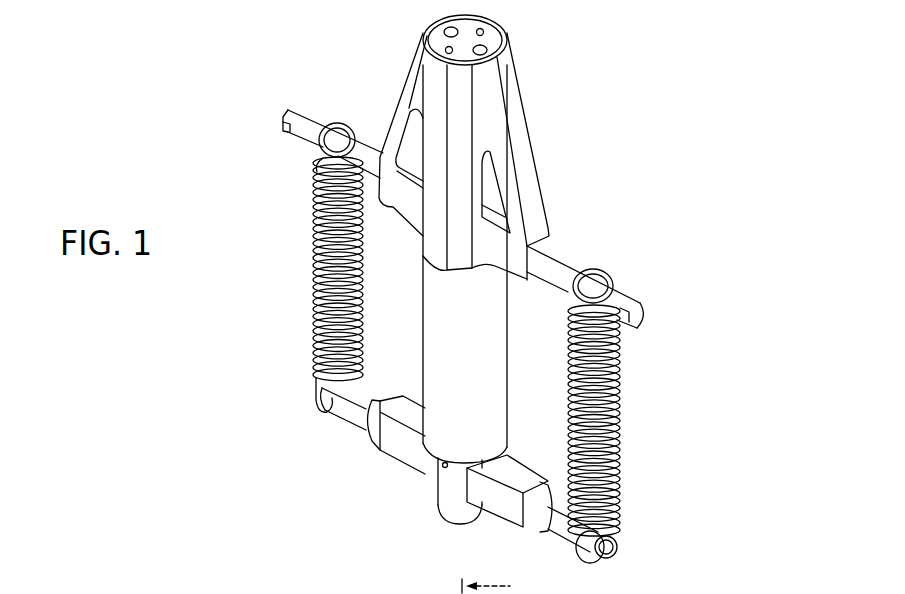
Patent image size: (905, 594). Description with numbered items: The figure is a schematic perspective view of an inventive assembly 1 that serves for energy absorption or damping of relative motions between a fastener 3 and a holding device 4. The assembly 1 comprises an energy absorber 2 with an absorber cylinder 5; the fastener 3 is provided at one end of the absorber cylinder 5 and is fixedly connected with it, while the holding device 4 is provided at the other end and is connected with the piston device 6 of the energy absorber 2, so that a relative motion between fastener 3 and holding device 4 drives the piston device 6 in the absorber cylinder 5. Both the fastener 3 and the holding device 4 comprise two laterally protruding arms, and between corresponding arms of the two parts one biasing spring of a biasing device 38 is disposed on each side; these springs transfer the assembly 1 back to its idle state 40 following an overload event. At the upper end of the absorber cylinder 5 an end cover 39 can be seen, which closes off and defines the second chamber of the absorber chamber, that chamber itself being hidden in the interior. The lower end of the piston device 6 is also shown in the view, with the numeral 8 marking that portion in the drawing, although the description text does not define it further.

The assembly 1 is at (110, 80).
The energy absorber 2 is at (527, 185).
The fastener 3 is at (312, 117).
The holding device 4 is at (347, 415).
The absorber cylinder 5 is at (440, 313).
The piston device 6 is at (450, 500).
The pin end 8 is at (467, 513).
The biasing device 38 is at (308, 270).
The end cover 39 is at (497, 42).
The idle state 40 is at (720, 105).